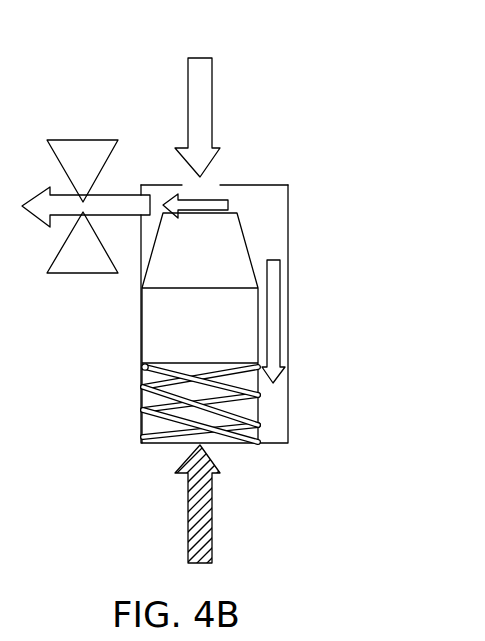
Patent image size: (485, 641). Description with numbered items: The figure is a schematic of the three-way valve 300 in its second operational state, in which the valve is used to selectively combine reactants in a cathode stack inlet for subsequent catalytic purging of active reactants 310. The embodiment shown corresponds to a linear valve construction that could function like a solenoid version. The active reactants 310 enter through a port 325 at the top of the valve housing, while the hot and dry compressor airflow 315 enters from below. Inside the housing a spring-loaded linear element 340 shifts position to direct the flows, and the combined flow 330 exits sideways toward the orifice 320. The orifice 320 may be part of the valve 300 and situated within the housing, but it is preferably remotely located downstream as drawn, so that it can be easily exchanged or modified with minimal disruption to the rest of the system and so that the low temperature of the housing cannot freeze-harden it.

The three-way valve 300 is at (112, 89).
The active reactants 310 is at (208, 103).
The compressor airflow 315 is at (207, 513).
The orifice 320 is at (82, 263).
The port 325 is at (200, 182).
The outlet flow 330 is at (124, 197).
The piston 340 is at (222, 332).